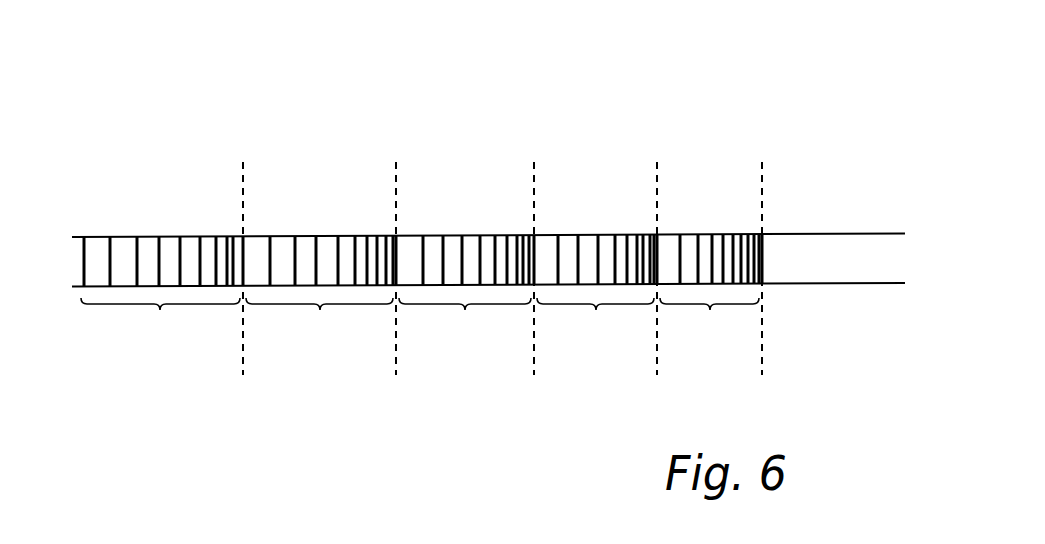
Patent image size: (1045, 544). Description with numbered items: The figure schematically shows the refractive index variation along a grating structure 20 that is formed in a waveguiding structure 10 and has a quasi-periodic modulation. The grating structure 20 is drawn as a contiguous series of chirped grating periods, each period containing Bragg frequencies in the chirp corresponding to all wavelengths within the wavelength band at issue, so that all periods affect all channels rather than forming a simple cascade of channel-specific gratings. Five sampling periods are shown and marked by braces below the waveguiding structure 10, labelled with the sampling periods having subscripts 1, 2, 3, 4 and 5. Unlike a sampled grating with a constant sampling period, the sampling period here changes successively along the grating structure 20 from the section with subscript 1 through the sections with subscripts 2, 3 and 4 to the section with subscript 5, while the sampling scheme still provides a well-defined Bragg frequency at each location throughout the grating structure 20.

The waveguiding structure 10 is at (312, 133).
The grating structure 20 is at (421, 251).
The grating section with period Λ 1 is at (162, 318).
The grating section with period Λ 2 is at (321, 318).
The grating section with period Λ 3 is at (466, 317).
The grating section with period Λ 4 is at (597, 318).
The grating section with period Λ 5 is at (711, 317).